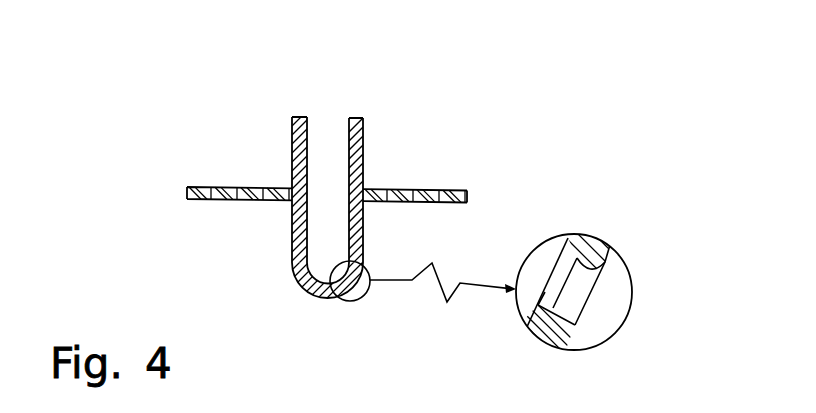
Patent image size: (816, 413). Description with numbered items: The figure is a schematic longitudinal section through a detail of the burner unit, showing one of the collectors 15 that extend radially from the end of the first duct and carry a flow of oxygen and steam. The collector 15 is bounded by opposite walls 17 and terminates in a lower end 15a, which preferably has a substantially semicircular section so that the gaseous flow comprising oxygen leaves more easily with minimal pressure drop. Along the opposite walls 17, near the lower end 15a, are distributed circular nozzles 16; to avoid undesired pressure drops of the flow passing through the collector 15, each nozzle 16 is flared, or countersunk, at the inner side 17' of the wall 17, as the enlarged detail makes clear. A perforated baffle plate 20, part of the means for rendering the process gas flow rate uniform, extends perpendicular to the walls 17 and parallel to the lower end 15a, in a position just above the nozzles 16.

The collector 15 is at (363, 146).
The lower end 15a is at (324, 298).
The nozzle 16 is at (295, 283).
The wall 17 is at (506, 230).
The inner side 17' is at (418, 193).
The perforated baffle plate 20 is at (226, 201).